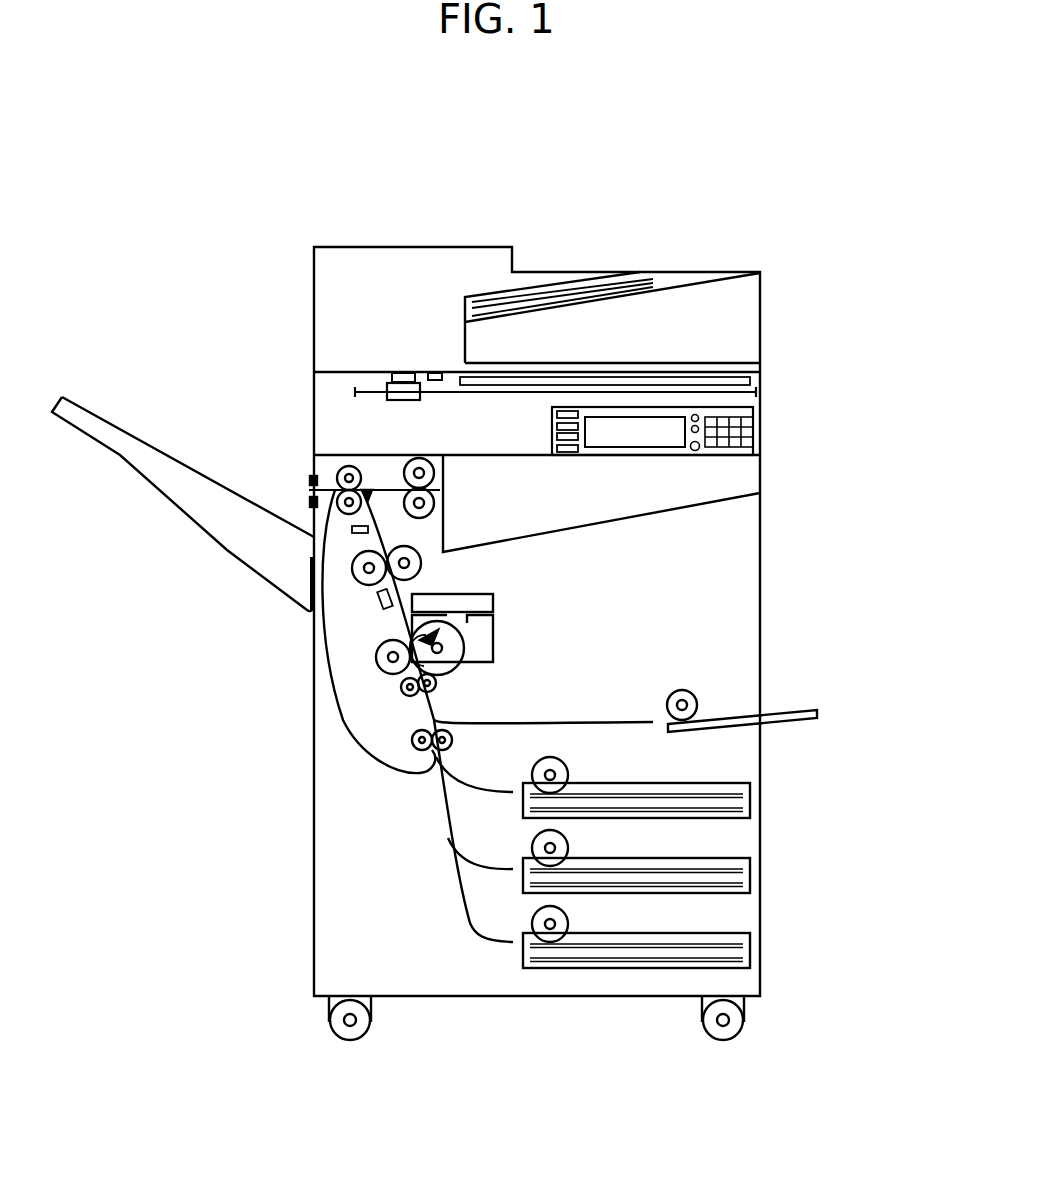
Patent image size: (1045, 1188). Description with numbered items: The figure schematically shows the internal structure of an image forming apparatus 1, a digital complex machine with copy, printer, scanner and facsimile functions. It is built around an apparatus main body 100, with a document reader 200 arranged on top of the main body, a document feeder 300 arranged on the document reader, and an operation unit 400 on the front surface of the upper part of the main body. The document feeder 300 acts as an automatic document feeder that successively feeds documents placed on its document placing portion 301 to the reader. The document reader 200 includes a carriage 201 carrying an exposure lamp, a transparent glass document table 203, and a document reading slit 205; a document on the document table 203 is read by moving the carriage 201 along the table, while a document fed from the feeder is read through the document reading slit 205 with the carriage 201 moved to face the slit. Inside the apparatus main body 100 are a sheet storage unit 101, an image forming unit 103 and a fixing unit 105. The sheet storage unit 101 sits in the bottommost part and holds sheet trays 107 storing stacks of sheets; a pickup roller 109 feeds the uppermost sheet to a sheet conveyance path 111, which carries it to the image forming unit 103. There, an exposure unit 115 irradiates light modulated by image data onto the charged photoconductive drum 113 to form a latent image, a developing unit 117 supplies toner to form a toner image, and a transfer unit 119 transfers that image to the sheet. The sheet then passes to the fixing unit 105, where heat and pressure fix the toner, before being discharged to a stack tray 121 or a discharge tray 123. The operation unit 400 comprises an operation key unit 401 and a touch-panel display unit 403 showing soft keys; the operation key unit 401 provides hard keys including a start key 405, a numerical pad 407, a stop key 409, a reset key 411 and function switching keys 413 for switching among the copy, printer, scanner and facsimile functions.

The image forming apparatus 1 is at (133, 243).
The apparatus main body 100 is at (728, 631).
The sheet storage unit 101 is at (782, 818).
The image forming unit 103 is at (366, 637).
The fixing unit 105 is at (367, 585).
The sheet trays 107 is at (745, 957).
The pickup roller 109 is at (568, 775).
The sheet conveyance path 111 is at (430, 710).
The photoconductive drum 113 is at (447, 665).
The exposure unit 115 is at (487, 602).
The developing unit 117 is at (487, 639).
The transfer unit 119 is at (382, 670).
The stack tray 121 is at (229, 549).
The discharge tray 123 is at (598, 523).
The document reader 200 is at (341, 401).
The carriage 201 is at (402, 402).
The document table 203 is at (752, 380).
The document reading slit 205 is at (400, 375).
The document feeder 300 is at (566, 273).
The document placing portion 301 is at (677, 278).
The operation unit 400 is at (770, 425).
The operation key unit 401 is at (758, 453).
The display unit 403 is at (612, 437).
The start key 405 is at (694, 452).
The numerical pad 407 is at (712, 448).
The stop key 409 is at (691, 425).
The reset key 411 is at (697, 412).
The function switching keys 413 is at (556, 441).